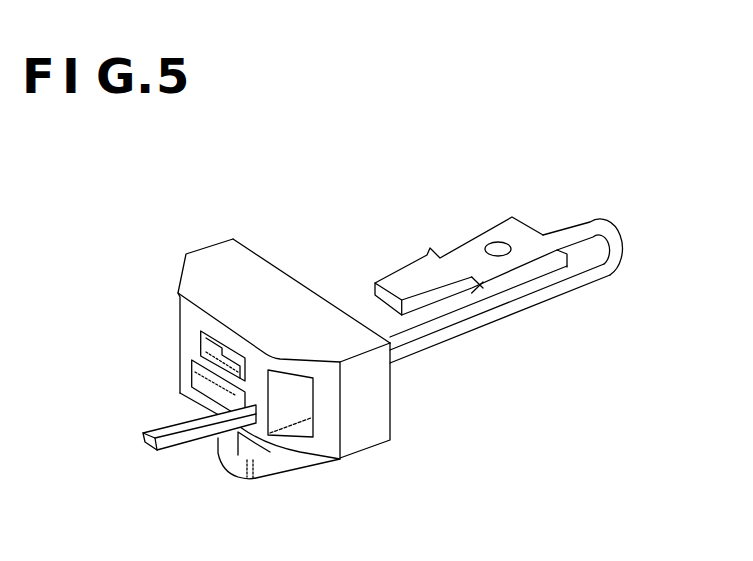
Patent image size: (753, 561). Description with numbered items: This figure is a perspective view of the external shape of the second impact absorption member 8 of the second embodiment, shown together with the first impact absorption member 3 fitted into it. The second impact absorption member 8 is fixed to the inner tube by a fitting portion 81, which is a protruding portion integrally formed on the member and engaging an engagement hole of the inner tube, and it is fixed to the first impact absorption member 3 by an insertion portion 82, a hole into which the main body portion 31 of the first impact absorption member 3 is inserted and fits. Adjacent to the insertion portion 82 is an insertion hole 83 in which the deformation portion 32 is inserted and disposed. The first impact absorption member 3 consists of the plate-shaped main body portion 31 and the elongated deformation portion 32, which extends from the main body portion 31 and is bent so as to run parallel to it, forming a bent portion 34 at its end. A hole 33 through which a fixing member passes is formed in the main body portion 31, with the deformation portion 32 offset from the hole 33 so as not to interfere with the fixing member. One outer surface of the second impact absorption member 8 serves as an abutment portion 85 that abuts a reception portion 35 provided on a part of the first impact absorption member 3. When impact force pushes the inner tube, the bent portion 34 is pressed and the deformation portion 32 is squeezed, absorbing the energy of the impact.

The second impact absorption member 8 is at (206, 250).
The fitting portion 81 is at (213, 460).
The insertion portion 82 is at (207, 345).
The insertion hole 83 is at (250, 388).
The abutment portion 85 is at (223, 465).
The first impact absorption member 3 is at (484, 285).
The main body portion 31 is at (435, 285).
The deformation portion 32 is at (527, 267).
The hole 33 is at (492, 244).
The bent portion 34 is at (620, 238).
The reception portion 35 is at (476, 296).